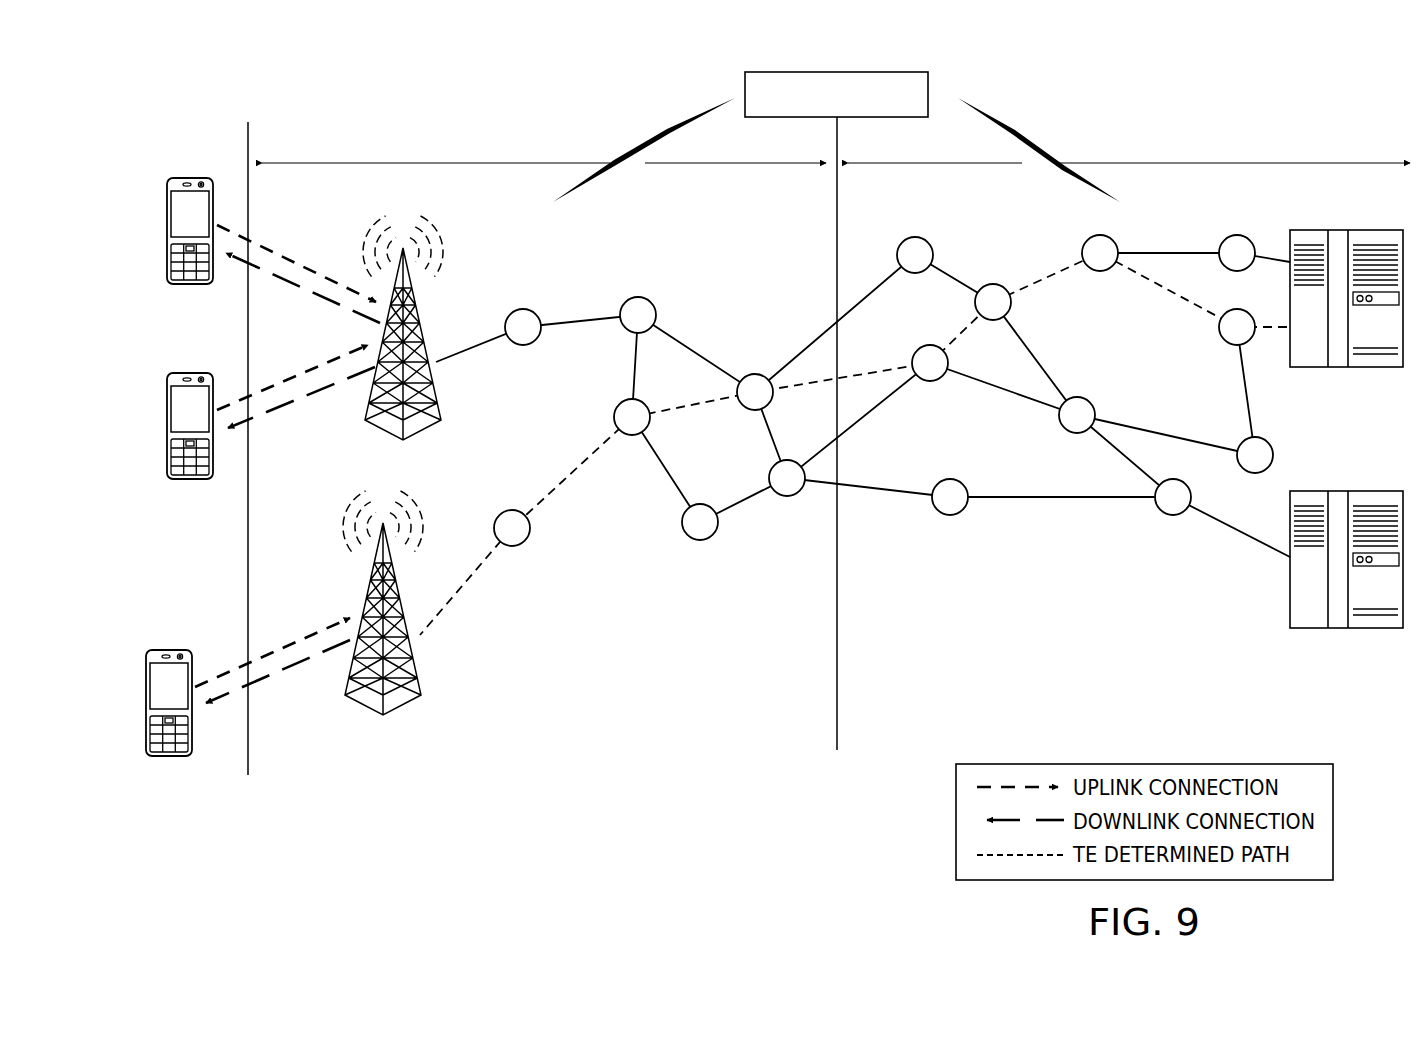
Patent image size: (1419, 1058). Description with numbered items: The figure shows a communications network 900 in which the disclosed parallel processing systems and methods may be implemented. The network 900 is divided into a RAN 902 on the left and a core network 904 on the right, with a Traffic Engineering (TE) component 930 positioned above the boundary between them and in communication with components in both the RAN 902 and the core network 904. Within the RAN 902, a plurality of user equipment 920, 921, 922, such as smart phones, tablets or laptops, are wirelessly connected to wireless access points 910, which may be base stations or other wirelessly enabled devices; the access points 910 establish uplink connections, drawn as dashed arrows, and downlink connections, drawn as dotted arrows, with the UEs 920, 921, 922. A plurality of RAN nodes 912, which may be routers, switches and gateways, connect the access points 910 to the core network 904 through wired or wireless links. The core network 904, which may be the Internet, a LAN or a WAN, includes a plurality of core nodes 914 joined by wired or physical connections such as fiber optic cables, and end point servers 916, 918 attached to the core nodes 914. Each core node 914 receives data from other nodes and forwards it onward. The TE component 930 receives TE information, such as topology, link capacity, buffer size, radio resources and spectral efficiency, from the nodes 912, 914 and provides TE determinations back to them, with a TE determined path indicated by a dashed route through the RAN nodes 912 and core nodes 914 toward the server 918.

The communications network 900 is at (334, 90).
The RAN 902 is at (488, 162).
The core network 904 is at (1255, 162).
The wireless access point 910 is at (384, 432).
The RAN node 912 is at (518, 308).
The core node 914 is at (912, 237).
The end point server 916 is at (1345, 628).
The end point server 918 is at (1343, 230).
The user equipment 920 is at (166, 212).
The user equipment 921 is at (166, 427).
The user equipment 922 is at (145, 704).
The Traffic Engineering (TE) component 930 is at (835, 72).